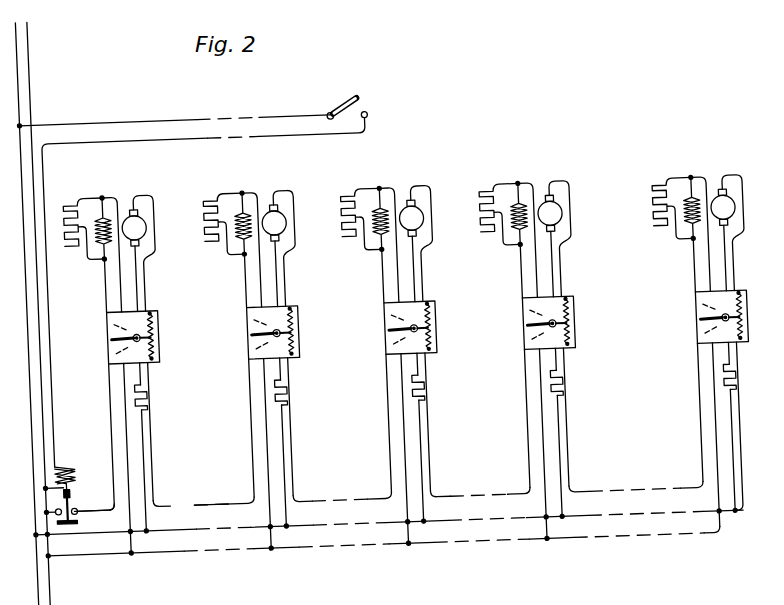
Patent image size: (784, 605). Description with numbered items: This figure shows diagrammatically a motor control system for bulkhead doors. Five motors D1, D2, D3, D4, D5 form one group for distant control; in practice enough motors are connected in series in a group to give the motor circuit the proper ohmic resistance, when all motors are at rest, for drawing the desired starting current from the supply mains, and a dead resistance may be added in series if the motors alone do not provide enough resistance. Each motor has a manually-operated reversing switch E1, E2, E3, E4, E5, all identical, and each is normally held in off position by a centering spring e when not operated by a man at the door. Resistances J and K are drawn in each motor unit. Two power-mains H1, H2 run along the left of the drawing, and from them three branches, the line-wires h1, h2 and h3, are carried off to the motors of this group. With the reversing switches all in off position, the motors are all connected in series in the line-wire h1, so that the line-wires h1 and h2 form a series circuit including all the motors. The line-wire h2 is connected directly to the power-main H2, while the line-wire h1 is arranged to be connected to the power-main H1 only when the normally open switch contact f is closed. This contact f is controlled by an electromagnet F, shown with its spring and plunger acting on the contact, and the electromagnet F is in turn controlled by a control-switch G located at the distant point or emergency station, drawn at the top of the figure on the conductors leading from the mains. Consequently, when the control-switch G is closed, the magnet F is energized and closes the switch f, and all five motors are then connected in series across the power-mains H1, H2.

The resistance K is at (371, 211).
The motor D5 is at (138, 238).
The motor D4 is at (275, 229).
The motor D3 is at (414, 226).
The motor D2 is at (552, 222).
The motor D1 is at (723, 216).
The reversing switch E5 is at (115, 337).
The reversing switch E4 is at (255, 332).
The reversing switch E3 is at (392, 328).
The reversing switch E2 is at (530, 323).
The reversing switch E1 is at (703, 317).
The centering spring e is at (458, 325).
The resistance J is at (446, 386).
The control-switch G is at (348, 110).
The power-main H1 is at (34, 383).
The power-main H2 is at (25, 405).
The electromagnet F is at (68, 474).
The switch contact f is at (68, 520).
The line-wire h1 is at (147, 509).
The line-wire h2 is at (147, 530).
The line-wire h3 is at (147, 552).